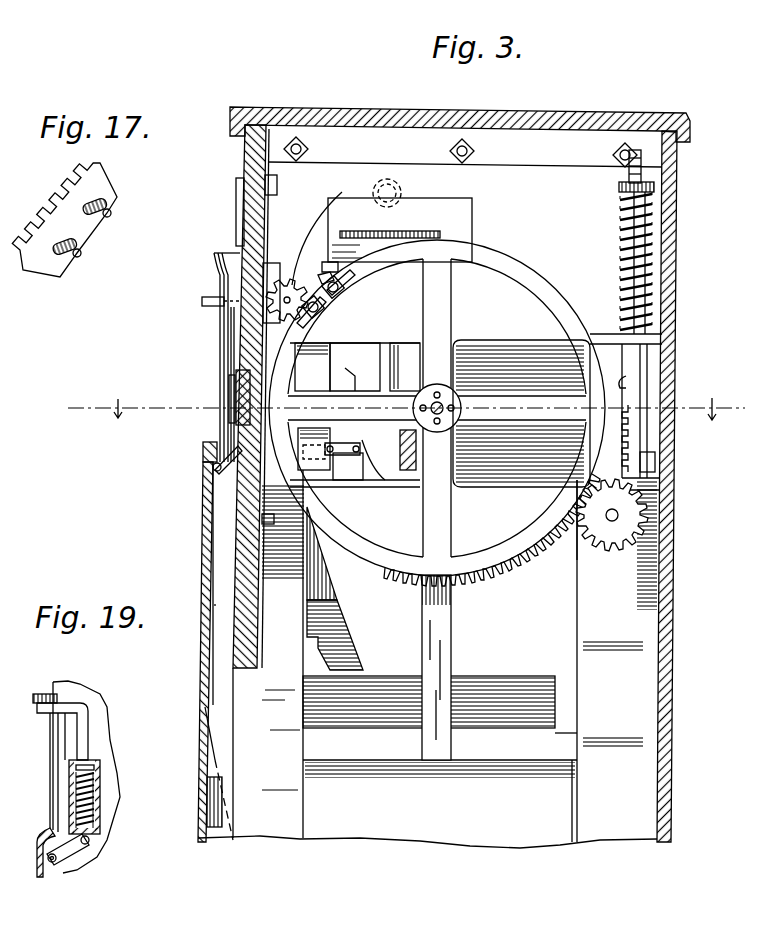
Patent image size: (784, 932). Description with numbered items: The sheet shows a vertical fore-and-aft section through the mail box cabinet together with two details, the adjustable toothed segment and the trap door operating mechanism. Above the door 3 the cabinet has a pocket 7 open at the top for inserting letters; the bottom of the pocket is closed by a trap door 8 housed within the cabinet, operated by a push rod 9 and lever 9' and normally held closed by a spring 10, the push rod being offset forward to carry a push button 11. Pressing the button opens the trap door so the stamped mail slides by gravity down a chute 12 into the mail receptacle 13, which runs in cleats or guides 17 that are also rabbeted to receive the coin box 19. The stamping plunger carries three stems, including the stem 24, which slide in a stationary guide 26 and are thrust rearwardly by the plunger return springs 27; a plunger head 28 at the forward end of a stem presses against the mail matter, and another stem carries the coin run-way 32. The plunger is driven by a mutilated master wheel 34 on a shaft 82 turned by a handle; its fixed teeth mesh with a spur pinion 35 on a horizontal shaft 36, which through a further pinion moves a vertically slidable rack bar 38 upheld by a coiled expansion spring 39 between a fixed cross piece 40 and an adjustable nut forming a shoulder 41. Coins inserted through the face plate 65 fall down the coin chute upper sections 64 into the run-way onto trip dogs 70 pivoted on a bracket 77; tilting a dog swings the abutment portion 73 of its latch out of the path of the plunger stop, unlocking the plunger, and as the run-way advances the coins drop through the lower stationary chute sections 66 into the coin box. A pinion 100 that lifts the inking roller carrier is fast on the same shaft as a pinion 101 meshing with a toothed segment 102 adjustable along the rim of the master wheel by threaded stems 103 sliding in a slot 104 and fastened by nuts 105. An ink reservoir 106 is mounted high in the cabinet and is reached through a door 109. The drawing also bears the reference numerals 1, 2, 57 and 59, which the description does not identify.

In FIG. 3, the frame 1 is at (576, 586).
In FIG. 3, the side wall 2 is at (670, 668).
In FIG. 3, the door 3 is at (203, 652).
In FIG. 3, the pocket 7 is at (222, 343).
In FIG. 19, the pocket 7 is at (53, 771).
In FIG. 3, the trap door 8 is at (214, 470).
In FIG. 19, the trap door 8 is at (60, 868).
In FIG. 3, the push rod 9 is at (212, 384).
In FIG. 19, the push rod 9 is at (87, 731).
In FIG. 3, the lever 9' is at (201, 458).
In FIG. 19, the lever 9' is at (90, 864).
In FIG. 3, the spring 10 is at (230, 423).
In FIG. 19, the spring 10 is at (100, 792).
In FIG. 3, the push button 11 is at (212, 300).
In FIG. 19, the push button 11 is at (37, 694).
In FIG. 3, the chute 12 is at (215, 604).
In FIG. 3, the mail receptacle 13 is at (385, 822).
In FIG. 3, the cleats or guides 17 is at (493, 752).
In FIG. 3, the coin box 19 is at (486, 690).
In FIG. 3, the plunger stem 24 is at (340, 420).
In FIG. 3, the stationary guide 26 is at (380, 392).
In FIG. 3, the plunger return springs 27 is at (406, 450).
In FIG. 3, the plunger head 28 is at (236, 392).
In FIG. 3, the coin run-way 32 is at (313, 374).
In FIG. 3, the master wheel 34 is at (486, 255).
In FIG. 3, the spur pinion 35 is at (603, 545).
In FIG. 3, the horizontal shaft 36 is at (616, 516).
In FIG. 3, the rack bar 38 is at (634, 418).
In FIG. 3, the coiled expansion spring 39 is at (653, 272).
In FIG. 3, the fixed cross piece 40 is at (662, 350).
In FIG. 3, the shoulder 41 is at (655, 190).
In FIG. 3, the column 57 is at (578, 628).
In FIG. 3, the hook 59 is at (626, 384).
In FIG. 3, the coin chute upper sections 64 is at (272, 232).
In FIG. 3, the face plate 65 is at (243, 213).
In FIG. 3, the lower stationary chute sections 66 is at (355, 604).
In FIG. 3, the trip dogs 70 is at (348, 441).
In FIG. 3, the abutment portion 73 is at (366, 455).
In FIG. 3, the bracket 77 is at (358, 470).
In FIG. 3, the shaft 82 is at (458, 433).
In FIG. 3, the pinion 100 is at (325, 262).
In FIG. 3, the pinion 101 is at (329, 228).
In FIG. 3, the toothed segment 102 is at (322, 284).
In FIG. 17, the toothed segment 102 is at (67, 193).
In FIG. 3, the threaded stems 103 is at (340, 290).
In FIG. 17, the threaded stems 103 is at (80, 253).
In FIG. 3, the slot 104 is at (334, 293).
In FIG. 3, the nuts 105 is at (352, 306).
In FIG. 3, the ink reservoir 106 is at (406, 240).
In FIG. 3, the door 109 is at (401, 196).